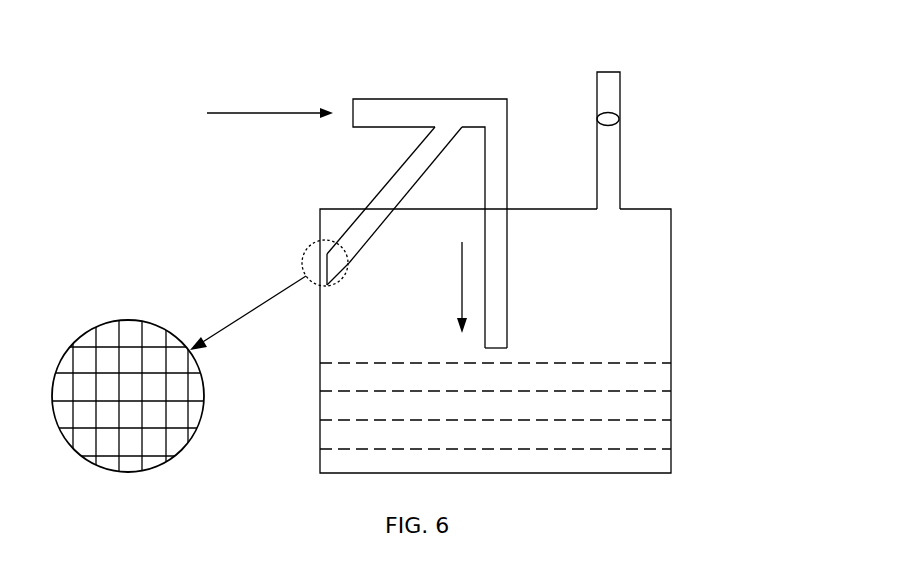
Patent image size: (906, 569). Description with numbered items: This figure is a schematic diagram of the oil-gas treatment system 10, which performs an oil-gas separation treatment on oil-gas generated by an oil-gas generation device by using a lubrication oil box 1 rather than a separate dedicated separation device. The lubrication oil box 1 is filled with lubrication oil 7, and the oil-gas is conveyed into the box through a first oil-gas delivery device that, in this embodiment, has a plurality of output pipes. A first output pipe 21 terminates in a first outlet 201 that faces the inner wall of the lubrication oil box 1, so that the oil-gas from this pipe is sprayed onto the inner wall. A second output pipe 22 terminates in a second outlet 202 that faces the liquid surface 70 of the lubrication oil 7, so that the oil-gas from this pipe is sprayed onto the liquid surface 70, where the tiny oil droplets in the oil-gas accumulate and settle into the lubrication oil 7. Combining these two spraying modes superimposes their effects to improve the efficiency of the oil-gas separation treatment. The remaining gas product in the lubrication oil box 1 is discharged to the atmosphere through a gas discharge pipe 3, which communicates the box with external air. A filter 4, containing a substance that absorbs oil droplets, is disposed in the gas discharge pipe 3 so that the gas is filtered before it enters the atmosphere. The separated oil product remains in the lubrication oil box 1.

The oil-gas treatment system 10 is at (169, 40).
The lubrication oil box 1 is at (653, 307).
The first output pipe 21 is at (410, 156).
The first outlet 201 is at (327, 263).
The second output pipe 22 is at (500, 257).
The second outlet 202 is at (505, 343).
The gas discharge pipe 3 is at (617, 155).
The filter 4 is at (620, 119).
The liquid surface 70 is at (607, 363).
The lubrication oil 7 is at (607, 391).